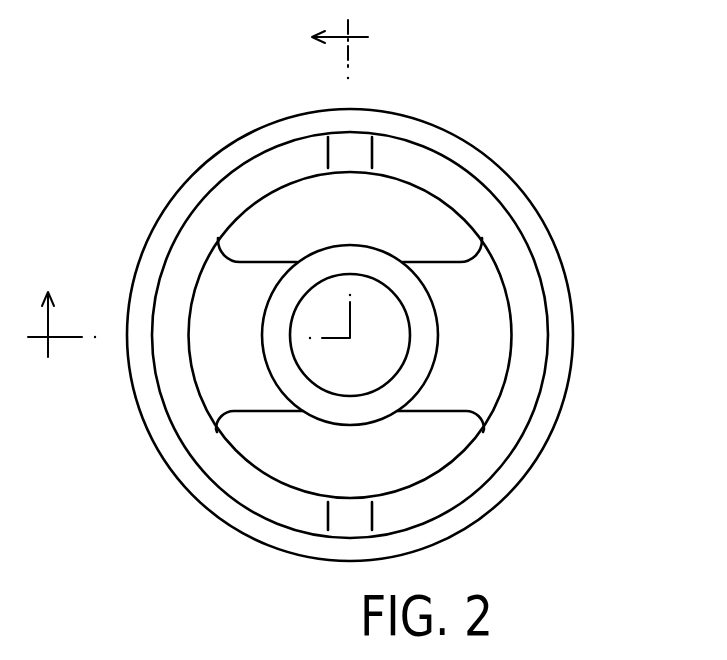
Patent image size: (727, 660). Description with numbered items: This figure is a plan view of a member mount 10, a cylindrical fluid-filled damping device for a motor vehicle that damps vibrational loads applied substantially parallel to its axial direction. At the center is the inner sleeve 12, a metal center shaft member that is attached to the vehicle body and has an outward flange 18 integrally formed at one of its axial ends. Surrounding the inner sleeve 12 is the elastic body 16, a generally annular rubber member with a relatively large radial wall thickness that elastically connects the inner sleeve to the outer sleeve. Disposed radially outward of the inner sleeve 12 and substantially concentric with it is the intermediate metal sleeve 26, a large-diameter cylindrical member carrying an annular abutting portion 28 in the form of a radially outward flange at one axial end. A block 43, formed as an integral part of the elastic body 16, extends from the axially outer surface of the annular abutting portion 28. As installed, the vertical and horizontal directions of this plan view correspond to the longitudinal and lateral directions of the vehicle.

The member mount 10 is at (242, 76).
The inner sleeve 12 is at (390, 268).
The outward flange 18 is at (350, 335).
The elastic body 16 is at (193, 407).
The intermediate metal sleeve 26 is at (527, 492).
The annular abutting portion 28 is at (555, 283).
The block 43 is at (172, 278).